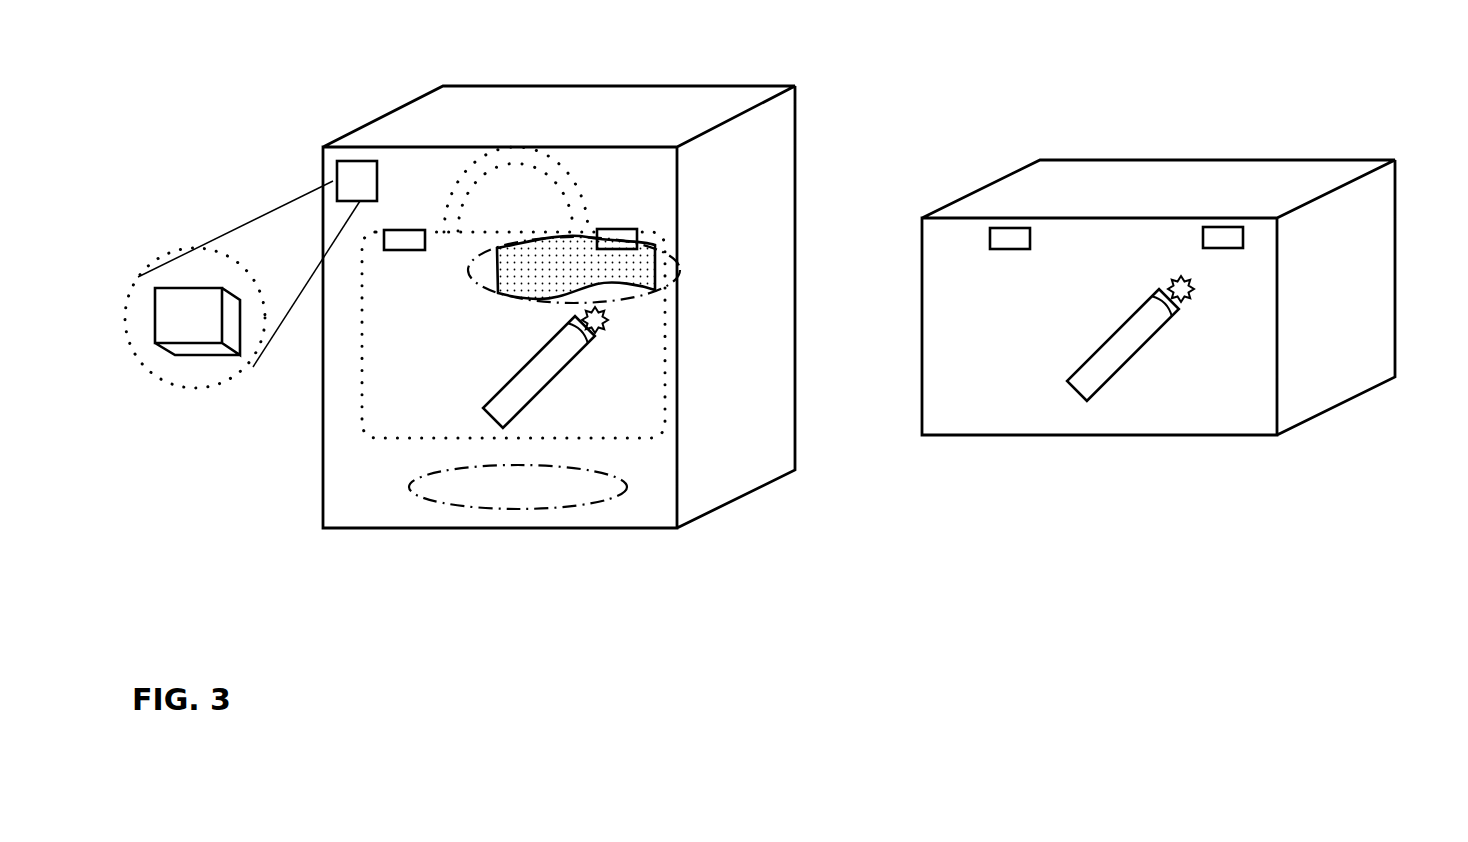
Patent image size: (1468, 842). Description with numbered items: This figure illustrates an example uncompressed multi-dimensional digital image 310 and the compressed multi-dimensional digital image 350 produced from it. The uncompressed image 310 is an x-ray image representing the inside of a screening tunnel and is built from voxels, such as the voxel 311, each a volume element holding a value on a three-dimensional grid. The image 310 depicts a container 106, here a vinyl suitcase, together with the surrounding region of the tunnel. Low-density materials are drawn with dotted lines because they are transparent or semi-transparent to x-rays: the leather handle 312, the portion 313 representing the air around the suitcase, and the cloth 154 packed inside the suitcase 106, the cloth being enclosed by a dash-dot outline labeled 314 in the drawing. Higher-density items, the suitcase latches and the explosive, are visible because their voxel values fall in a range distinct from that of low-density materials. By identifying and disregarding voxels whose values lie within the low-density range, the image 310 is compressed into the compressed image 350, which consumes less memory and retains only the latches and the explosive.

The uncompressed multi-dimensional digital image 310 is at (647, 80).
The voxel 311 is at (251, 274).
The leather handle 312 is at (516, 189).
The portion representing air 313 is at (518, 487).
The cloth region 314 is at (673, 270).
The container 106 is at (513, 335).
The cloth 154 is at (576, 267).
The compressed multi-dimensional digital image 350 is at (1340, 170).